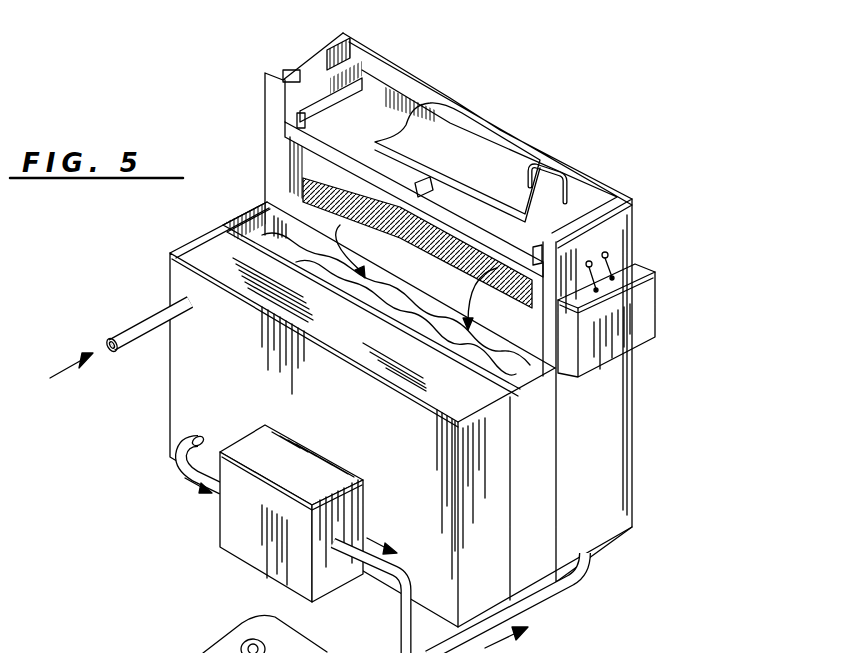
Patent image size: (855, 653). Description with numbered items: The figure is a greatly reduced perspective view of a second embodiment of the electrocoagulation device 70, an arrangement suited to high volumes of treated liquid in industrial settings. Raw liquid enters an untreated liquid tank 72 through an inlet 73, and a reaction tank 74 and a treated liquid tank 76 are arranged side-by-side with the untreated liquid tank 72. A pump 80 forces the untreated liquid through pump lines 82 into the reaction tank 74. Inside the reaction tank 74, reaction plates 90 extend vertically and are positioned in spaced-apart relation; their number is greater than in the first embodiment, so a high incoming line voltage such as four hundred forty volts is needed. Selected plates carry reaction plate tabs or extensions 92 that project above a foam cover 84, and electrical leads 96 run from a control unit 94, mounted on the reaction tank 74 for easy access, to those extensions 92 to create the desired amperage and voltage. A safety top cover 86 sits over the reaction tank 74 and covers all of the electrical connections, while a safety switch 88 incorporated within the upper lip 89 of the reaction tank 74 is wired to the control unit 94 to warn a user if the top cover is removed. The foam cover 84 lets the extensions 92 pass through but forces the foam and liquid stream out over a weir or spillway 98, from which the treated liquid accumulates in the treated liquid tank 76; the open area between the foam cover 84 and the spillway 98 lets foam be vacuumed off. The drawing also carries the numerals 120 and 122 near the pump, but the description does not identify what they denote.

The electrocoagulation device 70 is at (142, 278).
The untreated liquid tank 72 is at (350, 337).
The inlet 73 is at (118, 348).
The reaction tank 74 is at (285, 141).
The treated liquid tank 76 is at (227, 219).
The pump 80 is at (233, 518).
The pump lines 82 is at (190, 445).
The foam cover 84 is at (373, 112).
The safety top cover 86 is at (447, 122).
The safety switch 88 is at (284, 75).
The upper lip 89 is at (320, 67).
The reaction plates 90 is at (318, 181).
The reaction plate tabs or extensions 92 is at (300, 118).
The control unit 94 is at (630, 310).
The electrical leads 96 is at (407, 104).
The spillway 98 is at (307, 207).
The pump 120 is at (225, 645).
The fitting 122 is at (173, 646).